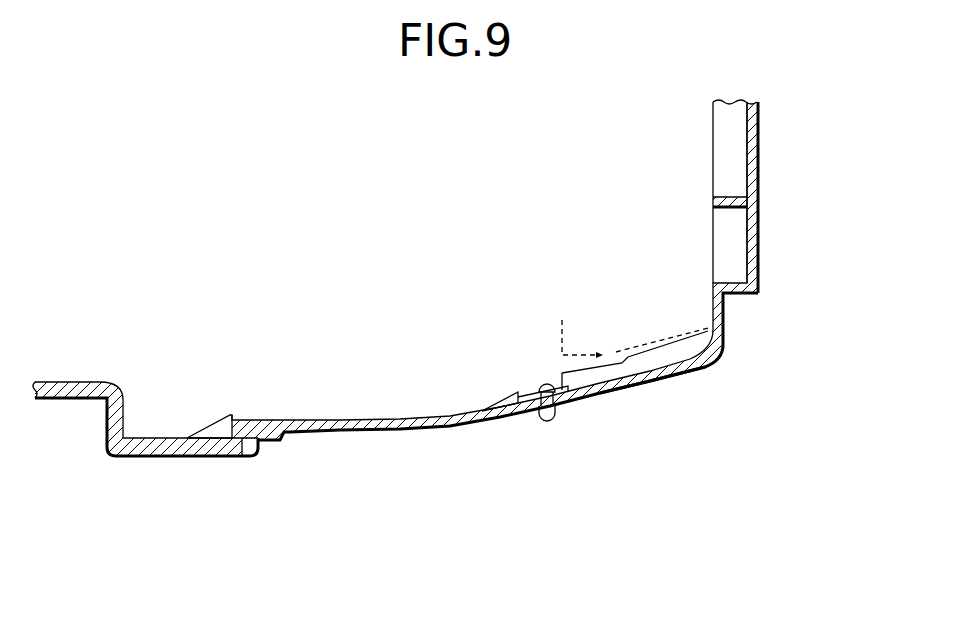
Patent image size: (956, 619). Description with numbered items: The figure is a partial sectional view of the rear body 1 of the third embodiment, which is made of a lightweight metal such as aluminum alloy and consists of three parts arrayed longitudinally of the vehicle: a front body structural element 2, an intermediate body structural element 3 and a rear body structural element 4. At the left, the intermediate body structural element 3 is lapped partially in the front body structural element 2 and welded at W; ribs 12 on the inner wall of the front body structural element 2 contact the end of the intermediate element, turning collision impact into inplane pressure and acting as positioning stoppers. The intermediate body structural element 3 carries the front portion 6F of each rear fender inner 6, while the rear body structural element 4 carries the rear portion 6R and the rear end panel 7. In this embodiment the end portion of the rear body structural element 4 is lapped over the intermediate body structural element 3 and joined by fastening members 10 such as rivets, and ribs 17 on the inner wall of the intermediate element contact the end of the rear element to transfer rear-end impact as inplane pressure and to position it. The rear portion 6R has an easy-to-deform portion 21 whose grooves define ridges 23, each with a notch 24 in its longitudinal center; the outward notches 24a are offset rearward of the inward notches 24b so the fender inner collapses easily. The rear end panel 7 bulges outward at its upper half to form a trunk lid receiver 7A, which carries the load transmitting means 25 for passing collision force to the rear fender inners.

The rear body 1 is at (115, 458).
The front body structural element 2 is at (170, 458).
The weld W is at (251, 460).
The ribs 12 is at (205, 428).
The intermediate body structural element 3 is at (351, 440).
The rear fender inner 6 is at (510, 299).
The front portion of rear fender inner 6F is at (408, 433).
The rear portion of rear fender inner 6R is at (704, 366).
The easy-to-deform portion 21 is at (629, 400).
The ribs 17 is at (507, 402).
The fastening members 10 is at (549, 422).
The ridges 23 is at (585, 372).
The notch 24 is at (697, 270).
The outward notches 24a is at (628, 357).
The inward notches 24b is at (592, 345).
The rear body structural element 4 is at (780, 251).
The rear end panel 7 is at (760, 150).
The trunk lid receiver 7A is at (752, 197).
The load transmitting means 25 is at (727, 190).